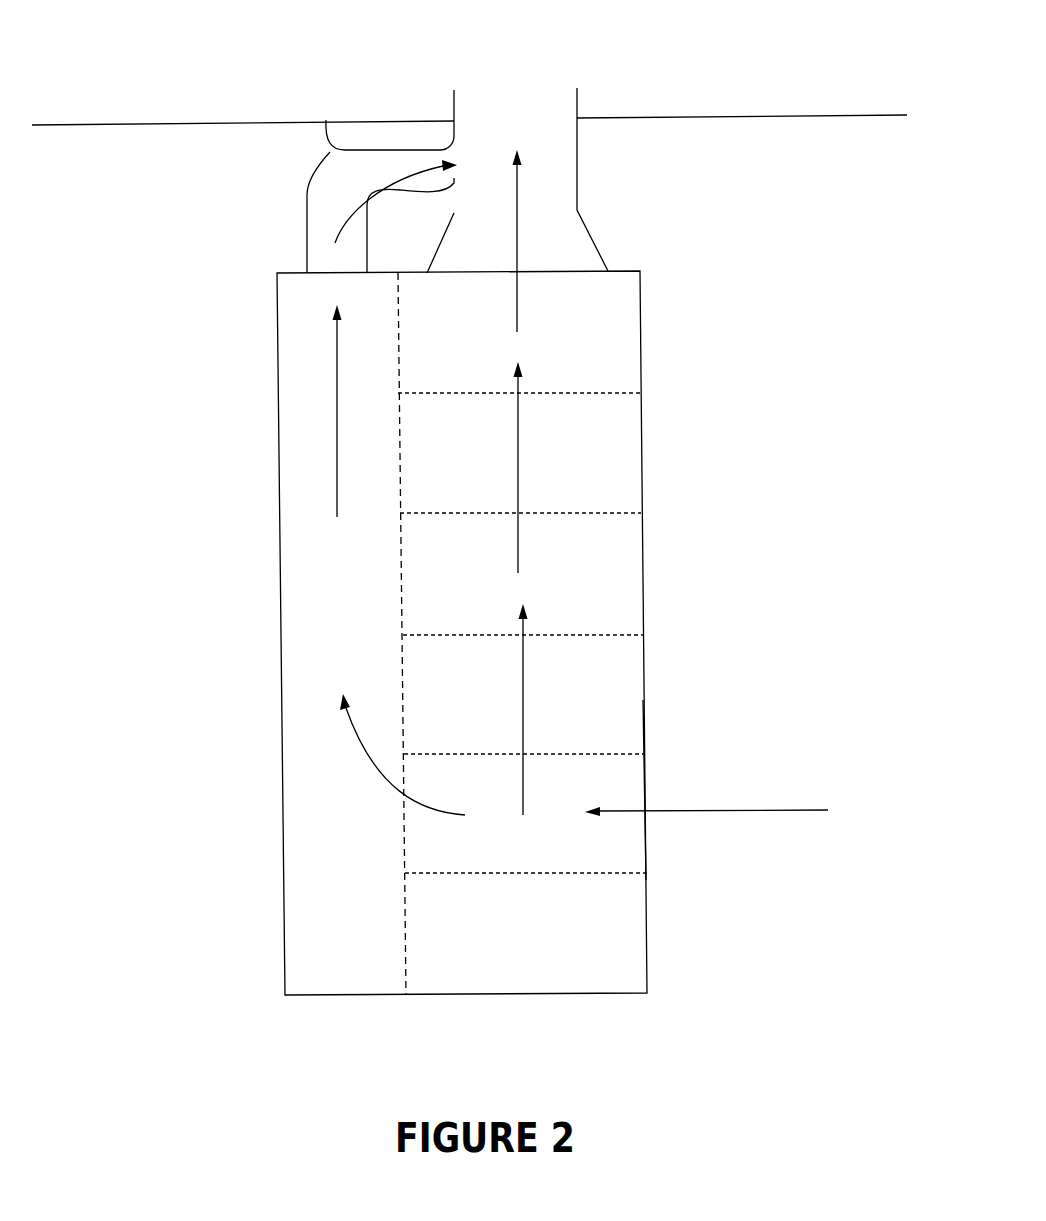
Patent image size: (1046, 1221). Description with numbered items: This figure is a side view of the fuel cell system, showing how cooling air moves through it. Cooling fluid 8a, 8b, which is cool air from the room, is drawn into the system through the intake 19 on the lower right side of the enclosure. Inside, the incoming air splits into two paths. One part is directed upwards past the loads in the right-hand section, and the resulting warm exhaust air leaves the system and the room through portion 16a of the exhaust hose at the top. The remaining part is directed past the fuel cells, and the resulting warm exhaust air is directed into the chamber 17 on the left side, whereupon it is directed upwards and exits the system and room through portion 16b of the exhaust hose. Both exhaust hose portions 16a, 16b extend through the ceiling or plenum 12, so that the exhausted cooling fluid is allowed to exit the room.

The cooling fluid 8a is at (706, 799).
The cooling fluid 8b is at (706, 799).
The ceiling or plenum 12 is at (668, 118).
The portion of the exhaust hose 16a is at (593, 240).
The portion of the exhaust hose 16b is at (326, 120).
The chamber 17 is at (338, 631).
The intake 19 is at (646, 782).